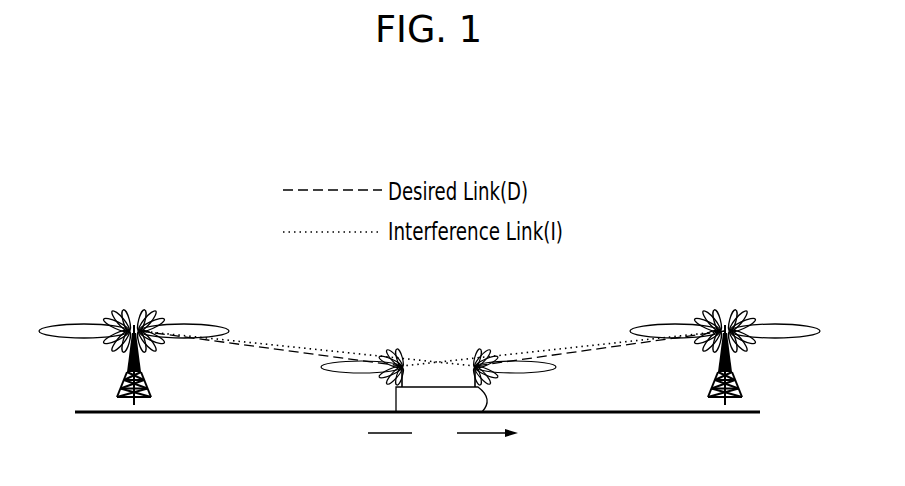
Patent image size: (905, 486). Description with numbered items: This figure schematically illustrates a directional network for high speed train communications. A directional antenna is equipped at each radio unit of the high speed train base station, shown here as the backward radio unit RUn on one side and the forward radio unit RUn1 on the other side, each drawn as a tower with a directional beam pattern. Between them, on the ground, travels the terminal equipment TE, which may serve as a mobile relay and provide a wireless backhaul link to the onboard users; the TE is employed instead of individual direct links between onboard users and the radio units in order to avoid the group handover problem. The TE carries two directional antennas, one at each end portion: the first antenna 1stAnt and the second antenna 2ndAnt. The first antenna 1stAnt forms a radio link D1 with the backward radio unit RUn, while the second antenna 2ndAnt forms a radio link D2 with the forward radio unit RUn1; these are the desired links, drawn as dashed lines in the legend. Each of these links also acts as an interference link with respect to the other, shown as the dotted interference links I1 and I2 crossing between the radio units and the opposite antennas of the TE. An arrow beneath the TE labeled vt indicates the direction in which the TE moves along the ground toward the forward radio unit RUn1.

The backward radio unit RUn is at (134, 336).
The forward radio unit RUn1 is at (725, 336).
The terminal equipment TE is at (441, 399).
The first antenna 1stAnt is at (363, 380).
The second antenna 2ndAnt is at (515, 380).
The radio link D1 is at (271, 352).
The radio link D2 is at (600, 352).
The interference link I1 is at (307, 343).
The interference link I2 is at (563, 343).
The velocity of TE vt is at (443, 432).